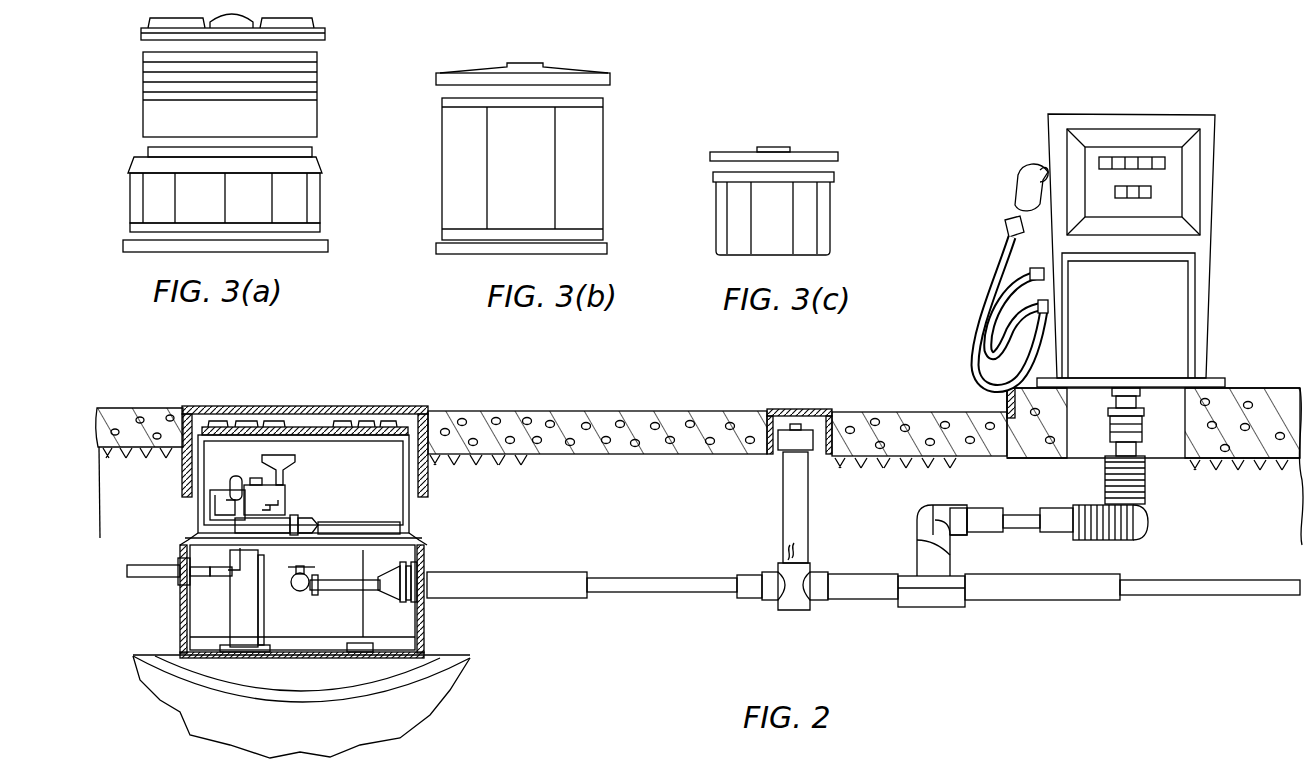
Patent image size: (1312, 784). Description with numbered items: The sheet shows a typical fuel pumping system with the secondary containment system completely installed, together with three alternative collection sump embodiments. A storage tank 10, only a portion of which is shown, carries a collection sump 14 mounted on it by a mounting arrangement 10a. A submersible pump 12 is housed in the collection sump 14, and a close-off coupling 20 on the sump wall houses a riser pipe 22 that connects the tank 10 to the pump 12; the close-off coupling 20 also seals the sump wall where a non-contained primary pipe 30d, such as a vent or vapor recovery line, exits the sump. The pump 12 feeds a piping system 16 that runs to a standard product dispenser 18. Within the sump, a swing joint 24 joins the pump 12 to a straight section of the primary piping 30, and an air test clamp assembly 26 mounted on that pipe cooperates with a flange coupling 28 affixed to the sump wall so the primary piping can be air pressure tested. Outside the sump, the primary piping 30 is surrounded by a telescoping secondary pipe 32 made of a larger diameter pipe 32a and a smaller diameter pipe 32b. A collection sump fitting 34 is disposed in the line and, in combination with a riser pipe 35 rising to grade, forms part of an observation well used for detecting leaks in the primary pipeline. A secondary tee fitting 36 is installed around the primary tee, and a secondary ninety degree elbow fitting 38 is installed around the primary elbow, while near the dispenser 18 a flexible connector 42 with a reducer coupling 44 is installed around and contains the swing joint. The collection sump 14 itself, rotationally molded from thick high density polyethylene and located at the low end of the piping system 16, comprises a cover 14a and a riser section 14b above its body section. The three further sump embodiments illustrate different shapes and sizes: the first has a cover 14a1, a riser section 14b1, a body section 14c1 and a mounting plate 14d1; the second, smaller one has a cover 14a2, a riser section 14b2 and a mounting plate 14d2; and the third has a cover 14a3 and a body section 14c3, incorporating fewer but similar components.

In FIG. 2, the storage tank 10 is at (418, 688).
In FIG. 2, the mounting arrangement 10a is at (275, 672).
In FIG. 2, the submersible pump 12 is at (275, 497).
In FIG. 2, the collection sump 14 is at (186, 523).
In FIG. 2, the cover 14a is at (310, 427).
In FIG. 2, the riser section 14b is at (699, 455).
In FIG. 3A, the cover 14a1 is at (141, 33).
In FIG. 3A, the riser section 14b1 is at (157, 107).
In FIG. 3A, the base or body section 14c1 is at (155, 188).
In FIG. 3A, the mounting plate 14d1 is at (125, 245).
In FIG. 3B, the cover 14a2 is at (612, 80).
In FIG. 3B, the riser section 14b2 is at (604, 128).
In FIG. 3B, the mounting plate 14d2 is at (478, 255).
In FIG. 3C, the cover 14a3 is at (806, 152).
In FIG. 3C, the base or body section 14c3 is at (830, 231).
In FIG. 2, the piping system 16 is at (645, 597).
In FIG. 2, the product dispenser 18 is at (1210, 315).
In FIG. 2, the close-off coupling 20 is at (178, 580).
In FIG. 2, the riser pipe 22 is at (247, 627).
In FIG. 2, the swing joint 24 is at (290, 585).
In FIG. 2, the air test clamp assembly 26 is at (359, 498).
In FIG. 2, the flange coupling 28 is at (427, 602).
In FIG. 2, the primary piping 30 is at (306, 589).
In FIG. 2, the non-contained primary pipe 30d is at (130, 578).
In FIG. 2, the telescoping secondary pipe 32 is at (750, 590).
In FIG. 2, the larger diameter pipe 32a is at (493, 585).
In FIG. 2, the smaller diameter pipe 32b is at (655, 583).
In FIG. 2, the collection sump fitting 34 is at (797, 611).
In FIG. 2, the riser pipe 35 is at (797, 522).
In FIG. 2, the secondary tee fitting 36 is at (957, 608).
In FIG. 2, the secondary 90° elbow fitting 38 is at (925, 520).
In FIG. 2, the flexible connector 42 is at (1142, 532).
In FIG. 2, the reducer coupling 44 is at (1142, 436).